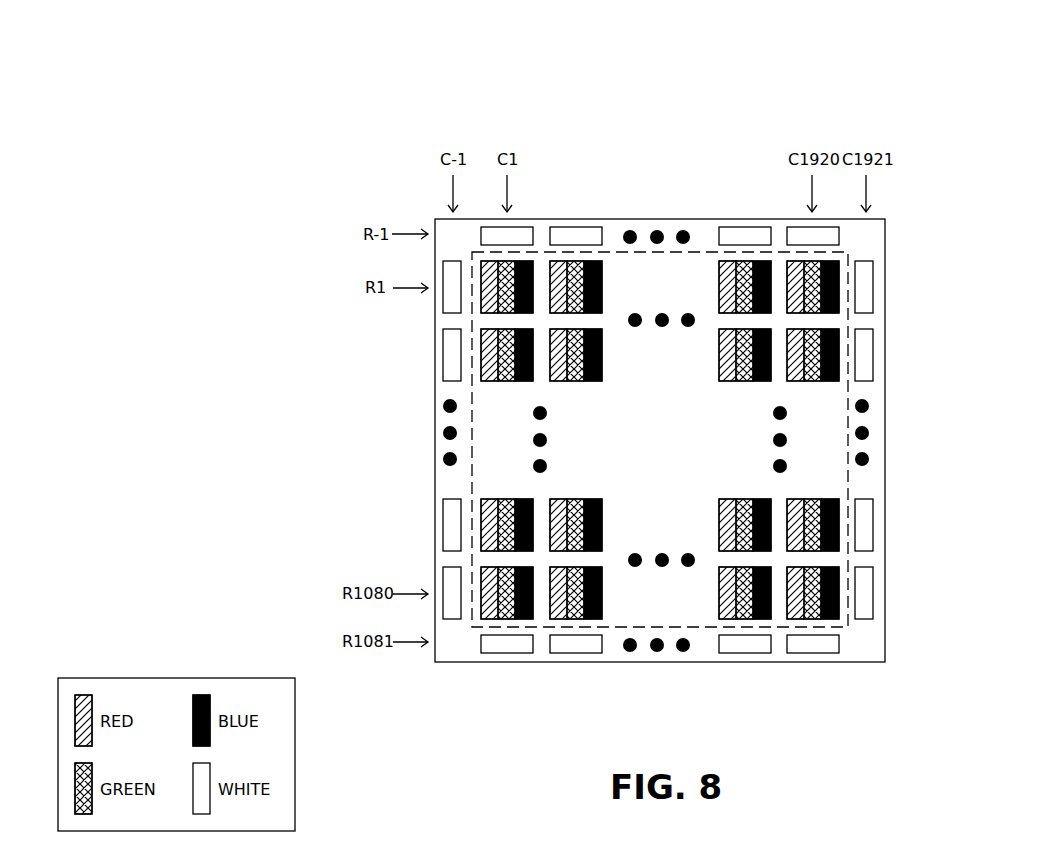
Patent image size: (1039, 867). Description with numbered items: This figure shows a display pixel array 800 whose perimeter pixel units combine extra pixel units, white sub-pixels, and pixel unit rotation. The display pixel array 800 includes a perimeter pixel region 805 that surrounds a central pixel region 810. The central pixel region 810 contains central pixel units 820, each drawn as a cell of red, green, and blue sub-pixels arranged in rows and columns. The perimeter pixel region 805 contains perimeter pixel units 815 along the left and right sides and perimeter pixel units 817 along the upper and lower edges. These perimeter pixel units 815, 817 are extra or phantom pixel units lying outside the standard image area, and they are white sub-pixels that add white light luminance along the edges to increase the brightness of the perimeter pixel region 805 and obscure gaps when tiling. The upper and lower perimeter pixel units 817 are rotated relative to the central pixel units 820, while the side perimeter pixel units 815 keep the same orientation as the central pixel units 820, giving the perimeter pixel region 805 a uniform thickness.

The display pixel array 800 is at (969, 80).
The perimeter pixel region 805 is at (613, 231).
The central pixel region 810 is at (676, 466).
The perimeter pixel units 815 is at (880, 349).
The perimeter pixel units 817 is at (736, 218).
The central pixel units 820 is at (611, 381).